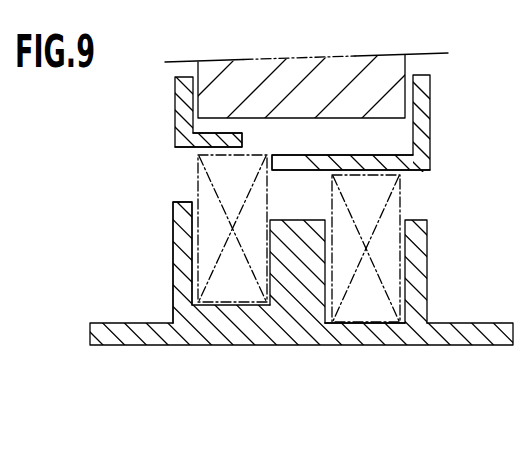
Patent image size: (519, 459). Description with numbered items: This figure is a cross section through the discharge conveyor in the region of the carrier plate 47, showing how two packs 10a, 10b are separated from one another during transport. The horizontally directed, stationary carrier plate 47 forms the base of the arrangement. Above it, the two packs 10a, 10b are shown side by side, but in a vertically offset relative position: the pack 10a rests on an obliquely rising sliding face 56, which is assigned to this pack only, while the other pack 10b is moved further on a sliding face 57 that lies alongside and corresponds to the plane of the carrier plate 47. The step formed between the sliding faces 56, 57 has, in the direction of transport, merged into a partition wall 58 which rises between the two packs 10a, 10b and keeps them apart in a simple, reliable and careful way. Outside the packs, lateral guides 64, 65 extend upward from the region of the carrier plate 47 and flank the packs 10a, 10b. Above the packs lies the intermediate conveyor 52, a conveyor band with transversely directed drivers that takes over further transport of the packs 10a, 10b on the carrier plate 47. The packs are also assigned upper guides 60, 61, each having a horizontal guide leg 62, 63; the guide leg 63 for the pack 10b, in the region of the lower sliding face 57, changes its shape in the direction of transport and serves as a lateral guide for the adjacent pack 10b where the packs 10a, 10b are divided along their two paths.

The pack 10a is at (232, 277).
The pack 10b is at (365, 292).
The carrier plate 47 is at (104, 360).
The intermediate conveyor 52 is at (373, 80).
The sliding face 56 is at (255, 308).
The sliding face 57 is at (358, 324).
The partition wall 58 is at (303, 274).
The upper guide 60 is at (158, 108).
The upper guide 61 is at (446, 75).
The guide leg 62 is at (221, 143).
The guide leg 63 is at (370, 158).
The lateral guide 64 is at (181, 243).
The lateral guide 65 is at (418, 258).